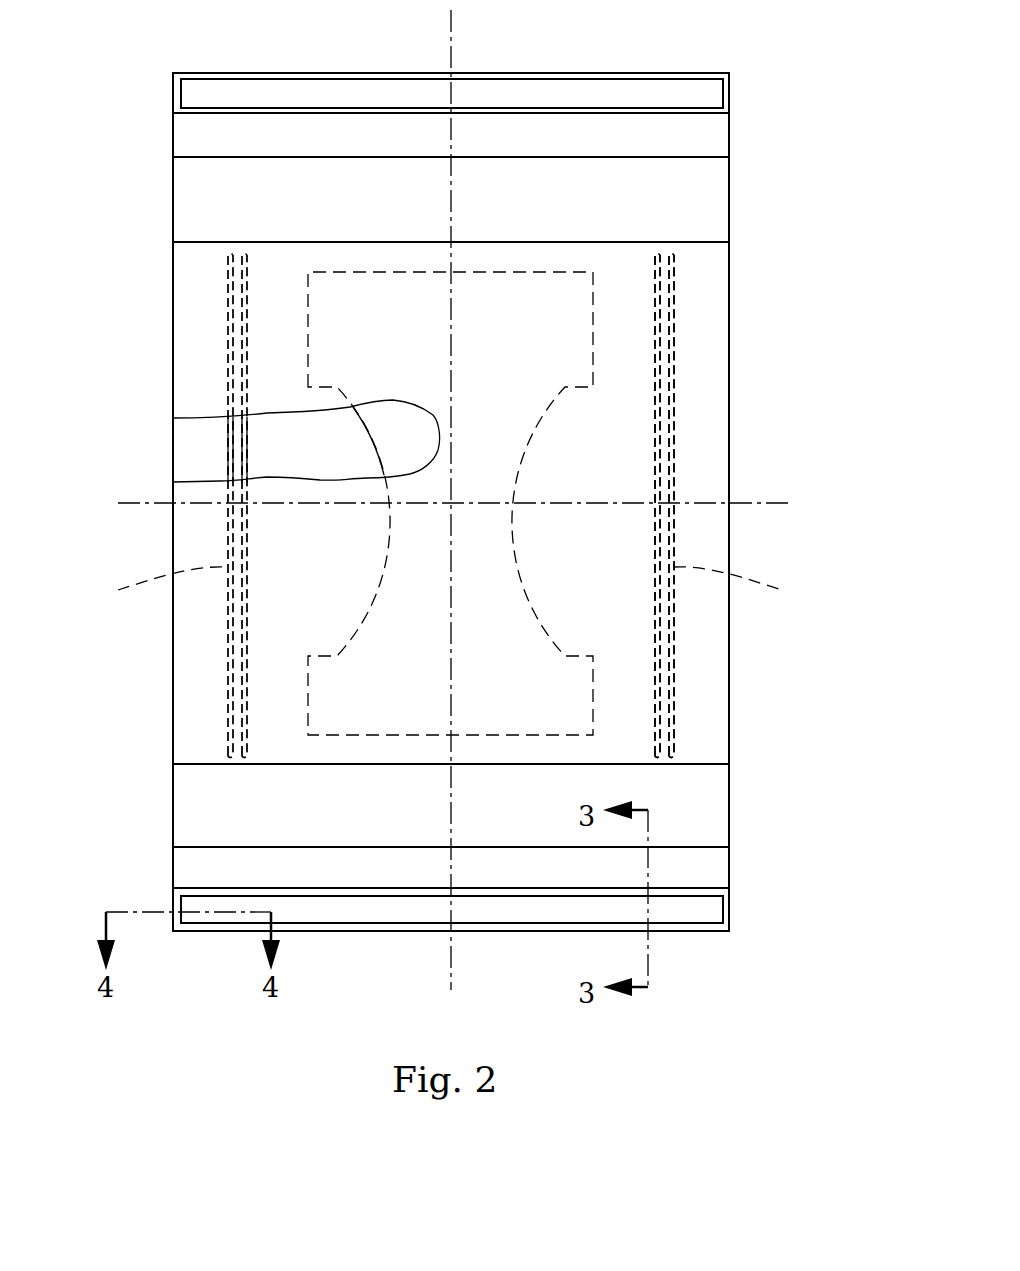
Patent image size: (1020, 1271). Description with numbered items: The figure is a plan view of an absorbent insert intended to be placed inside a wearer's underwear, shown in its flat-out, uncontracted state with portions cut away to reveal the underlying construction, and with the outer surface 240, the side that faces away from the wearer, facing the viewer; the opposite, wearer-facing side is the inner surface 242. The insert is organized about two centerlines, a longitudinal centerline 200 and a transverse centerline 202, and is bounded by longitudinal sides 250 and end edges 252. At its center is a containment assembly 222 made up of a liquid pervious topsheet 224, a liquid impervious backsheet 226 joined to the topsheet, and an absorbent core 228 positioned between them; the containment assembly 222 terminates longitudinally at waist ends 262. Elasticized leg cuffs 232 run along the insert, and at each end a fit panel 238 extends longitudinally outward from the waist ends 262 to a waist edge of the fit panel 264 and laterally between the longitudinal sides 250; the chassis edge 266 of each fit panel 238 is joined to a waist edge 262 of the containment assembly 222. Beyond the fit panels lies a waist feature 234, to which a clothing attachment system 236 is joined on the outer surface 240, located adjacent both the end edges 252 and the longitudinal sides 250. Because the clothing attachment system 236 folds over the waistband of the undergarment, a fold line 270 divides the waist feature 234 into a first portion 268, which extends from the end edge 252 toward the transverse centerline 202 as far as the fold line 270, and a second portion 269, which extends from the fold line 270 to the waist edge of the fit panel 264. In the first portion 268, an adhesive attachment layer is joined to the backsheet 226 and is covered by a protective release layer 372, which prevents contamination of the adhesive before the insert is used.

The longitudinal centerline 200 is at (600, 0).
The transverse centerline 202 is at (130, 503).
The containment assembly 222 is at (522, 392).
The liquid pervious topsheet 224 is at (268, 452).
The liquid impervious backsheet 226 is at (635, 295).
The absorbent core 228 is at (397, 433).
The elasticized leg cuffs 232 is at (449, 585).
The waist feature 234 is at (190, 132).
The clothing attachment system 236 is at (228, 93).
The fit panel 238 is at (193, 224).
The outer surface 240 is at (693, 322).
The inner surface 242 is at (427, 913).
The longitudinal sides 250 is at (173, 648).
The end edges 252 is at (597, 74).
The waist ends 262 is at (220, 242).
The waist edge of the fit panel 264 is at (210, 157).
The chassis edge 266 is at (776, 730).
The first portion 268 is at (705, 96).
The second portion 269 is at (653, 142).
The fold line 270 is at (700, 115).
The protective release layer 372 is at (255, 1050).